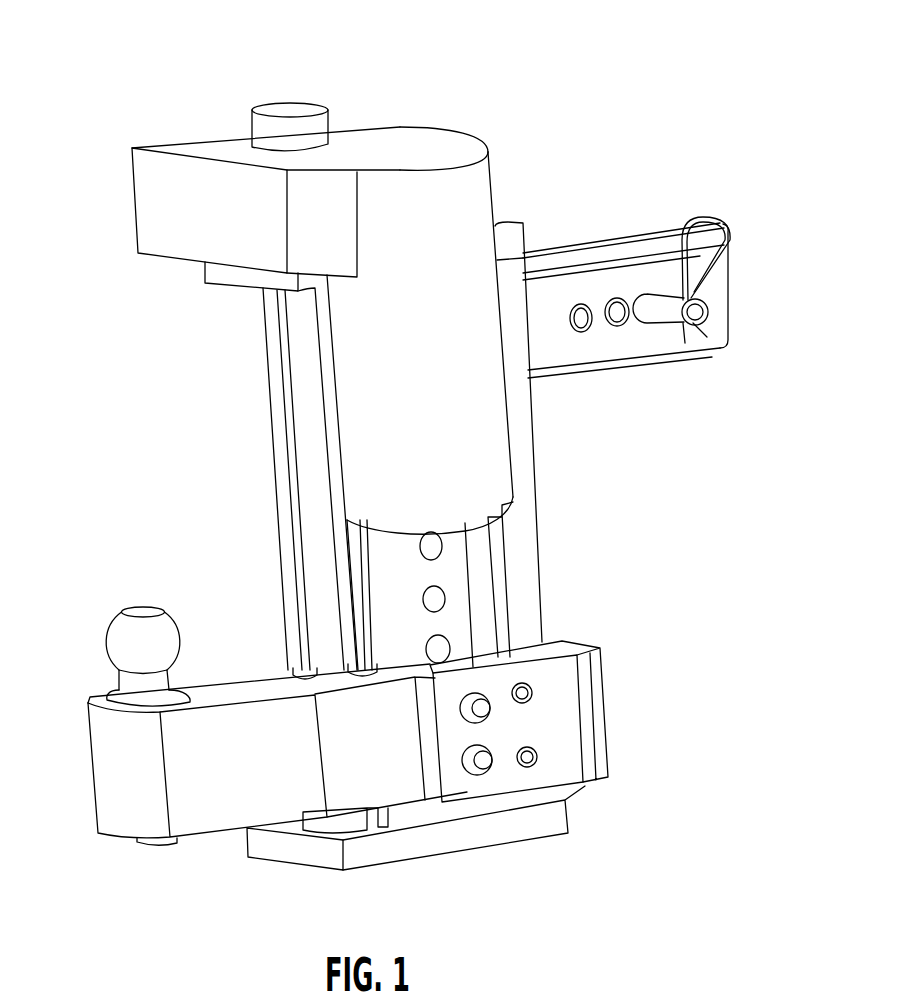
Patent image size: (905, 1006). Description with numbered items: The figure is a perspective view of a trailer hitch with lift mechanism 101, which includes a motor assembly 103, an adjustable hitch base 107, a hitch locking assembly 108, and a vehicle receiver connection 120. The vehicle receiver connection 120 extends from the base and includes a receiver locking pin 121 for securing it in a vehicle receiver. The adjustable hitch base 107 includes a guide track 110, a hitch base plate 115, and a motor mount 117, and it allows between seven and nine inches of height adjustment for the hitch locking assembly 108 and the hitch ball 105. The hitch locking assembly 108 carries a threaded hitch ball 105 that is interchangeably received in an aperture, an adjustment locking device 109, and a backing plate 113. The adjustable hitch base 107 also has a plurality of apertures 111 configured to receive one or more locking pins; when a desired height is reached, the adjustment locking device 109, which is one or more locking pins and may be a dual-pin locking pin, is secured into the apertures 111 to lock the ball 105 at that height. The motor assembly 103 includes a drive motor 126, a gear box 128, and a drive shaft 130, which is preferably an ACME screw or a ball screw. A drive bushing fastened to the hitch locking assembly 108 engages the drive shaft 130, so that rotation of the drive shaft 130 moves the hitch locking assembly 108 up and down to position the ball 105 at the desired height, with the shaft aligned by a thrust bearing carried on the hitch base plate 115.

The trailer hitch with lift mechanism 101 is at (437, 52).
The motor assembly 103 is at (228, 107).
The threaded hitch ball 105 is at (117, 611).
The adjustable hitch base 107 is at (375, 562).
The hitch locking assembly 108 is at (240, 677).
The adjustment locking device 109 is at (488, 765).
The guide track 110 is at (485, 585).
The plurality of apertures 111 is at (433, 542).
The backing plate 113 is at (597, 732).
The hitch base plate 115 is at (297, 853).
The motor mount 117 is at (525, 237).
The vehicle receiver connection 120 is at (648, 243).
The receiver locking pin 121 is at (727, 310).
The drive motor 126 is at (490, 177).
The gear box 128 is at (132, 208).
The drive shaft 130 is at (288, 355).